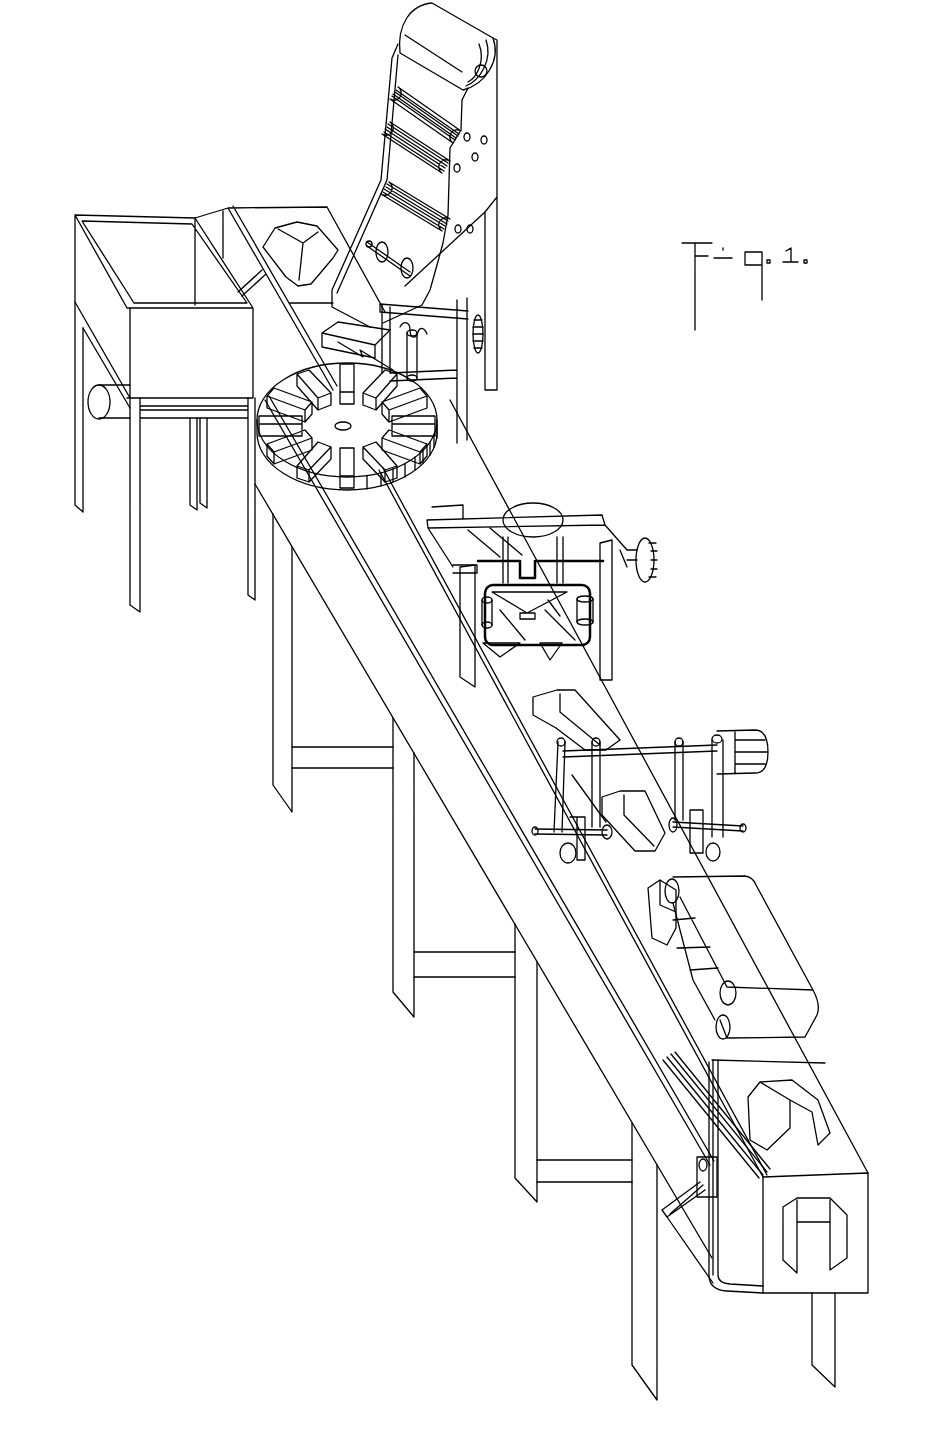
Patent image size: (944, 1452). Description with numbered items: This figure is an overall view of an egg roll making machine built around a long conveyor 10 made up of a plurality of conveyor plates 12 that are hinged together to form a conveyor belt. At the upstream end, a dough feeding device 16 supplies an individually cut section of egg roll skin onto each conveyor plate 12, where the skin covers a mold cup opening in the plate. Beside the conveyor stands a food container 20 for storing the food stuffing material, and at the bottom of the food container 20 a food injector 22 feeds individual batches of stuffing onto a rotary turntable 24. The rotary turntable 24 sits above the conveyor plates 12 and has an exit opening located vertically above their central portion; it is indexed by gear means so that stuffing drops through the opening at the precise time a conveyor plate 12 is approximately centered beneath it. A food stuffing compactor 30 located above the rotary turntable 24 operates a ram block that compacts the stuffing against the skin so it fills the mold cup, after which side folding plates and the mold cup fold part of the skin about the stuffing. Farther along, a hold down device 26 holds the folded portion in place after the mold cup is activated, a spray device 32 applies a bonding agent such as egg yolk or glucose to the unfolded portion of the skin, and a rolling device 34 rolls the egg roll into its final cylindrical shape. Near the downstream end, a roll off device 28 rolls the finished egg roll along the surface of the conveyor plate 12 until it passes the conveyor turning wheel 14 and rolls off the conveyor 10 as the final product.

The conveyor 10 is at (402, 693).
The conveyor plates 12 is at (258, 215).
The conveyor turning wheel 14 is at (712, 1262).
The dough feeding device 16 is at (491, 165).
The food container 20 is at (86, 252).
The food injector 22 is at (165, 414).
The rotary turntable 24 is at (283, 470).
The hold down device 26 is at (626, 632).
The roll off device 28 is at (817, 951).
The food stuffing compactor 30 is at (488, 401).
The spray device 32 is at (533, 510).
The rolling device 34 is at (703, 731).